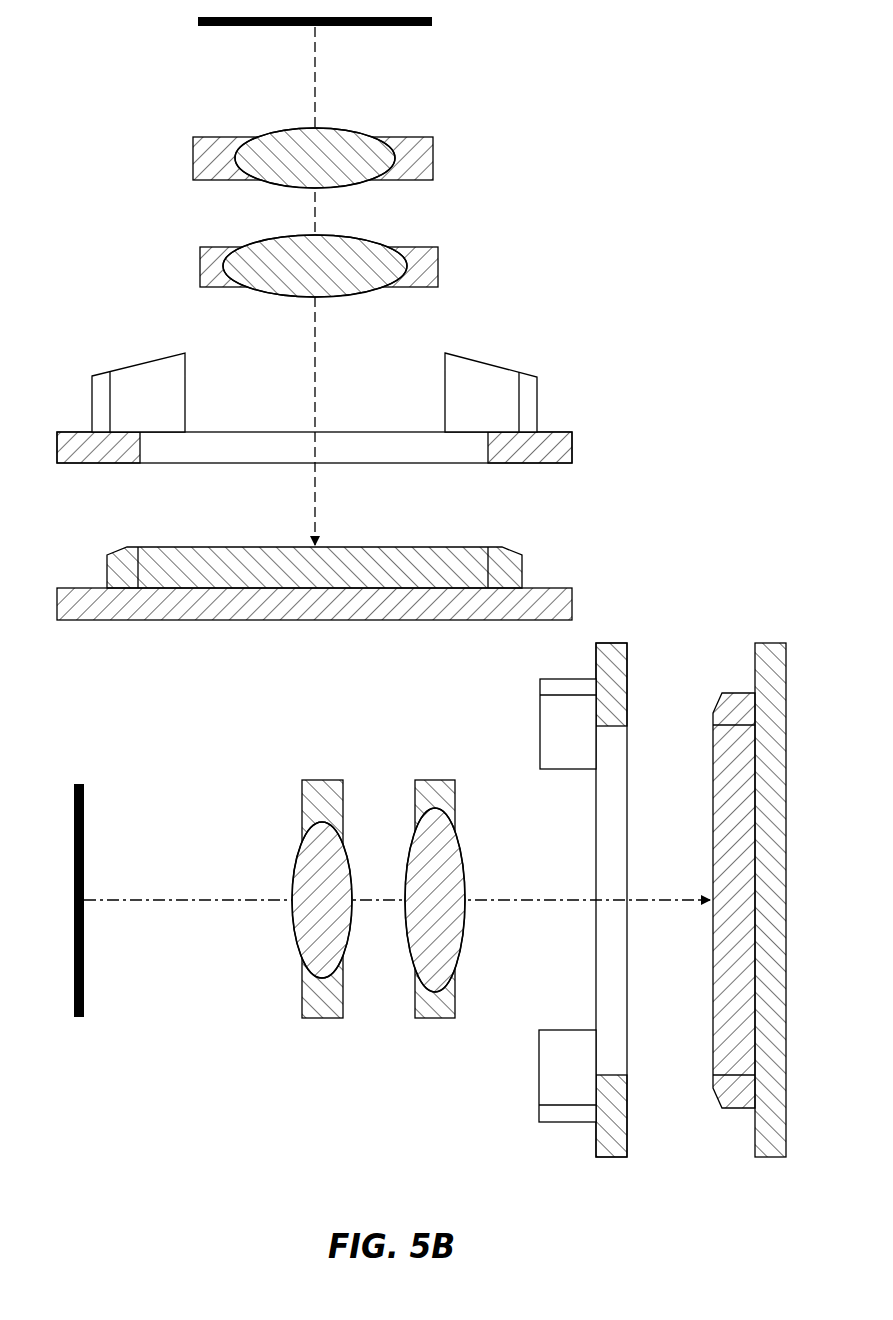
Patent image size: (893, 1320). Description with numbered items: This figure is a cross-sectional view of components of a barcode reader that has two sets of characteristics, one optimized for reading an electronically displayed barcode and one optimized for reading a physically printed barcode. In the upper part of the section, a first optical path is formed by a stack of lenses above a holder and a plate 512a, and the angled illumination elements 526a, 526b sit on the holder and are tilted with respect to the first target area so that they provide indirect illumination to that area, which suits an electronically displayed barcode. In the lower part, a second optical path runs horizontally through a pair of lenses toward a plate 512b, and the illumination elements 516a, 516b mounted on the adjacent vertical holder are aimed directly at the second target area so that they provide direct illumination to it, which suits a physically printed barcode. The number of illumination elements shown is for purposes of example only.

The illumination element 526a is at (485, 383).
The illumination element 526b is at (147, 393).
The first lens assembly substrate 512a is at (440, 560).
The second lens assembly substrate 512b is at (727, 773).
The illumination element 516a is at (552, 728).
The illumination element 516b is at (539, 1065).